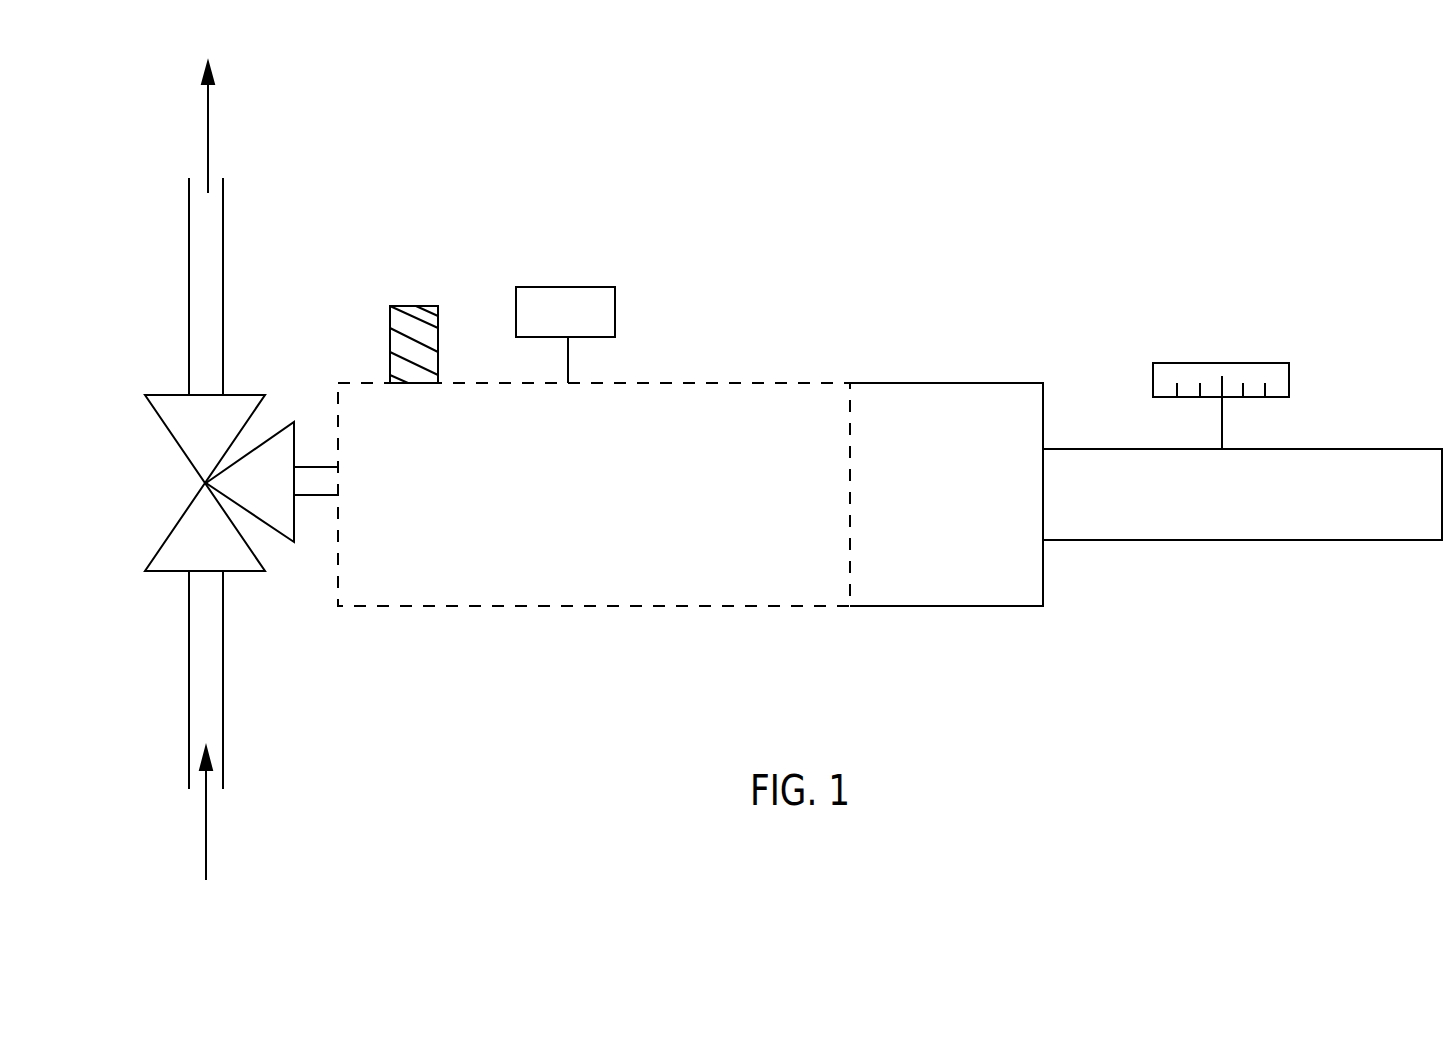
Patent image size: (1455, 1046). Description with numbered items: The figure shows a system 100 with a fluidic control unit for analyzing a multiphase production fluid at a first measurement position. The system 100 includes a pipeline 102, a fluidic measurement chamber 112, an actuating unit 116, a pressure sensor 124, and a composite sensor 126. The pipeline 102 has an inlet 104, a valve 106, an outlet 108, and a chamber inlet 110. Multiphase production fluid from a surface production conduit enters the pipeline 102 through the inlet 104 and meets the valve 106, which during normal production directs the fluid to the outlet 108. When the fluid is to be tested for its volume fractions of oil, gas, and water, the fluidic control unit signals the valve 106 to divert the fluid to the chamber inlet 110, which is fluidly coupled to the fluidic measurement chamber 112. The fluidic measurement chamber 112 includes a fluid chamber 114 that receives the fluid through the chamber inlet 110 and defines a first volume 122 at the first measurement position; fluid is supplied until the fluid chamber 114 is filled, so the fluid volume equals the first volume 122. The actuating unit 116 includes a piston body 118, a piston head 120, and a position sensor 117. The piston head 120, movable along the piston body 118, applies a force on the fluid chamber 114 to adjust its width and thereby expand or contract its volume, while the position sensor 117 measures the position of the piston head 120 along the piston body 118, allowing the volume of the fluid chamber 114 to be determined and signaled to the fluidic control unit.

The system 100 is at (654, 132).
The pipeline 102 is at (148, 125).
The inlet 104 is at (189, 657).
The valve 106 is at (165, 393).
The outlet 108 is at (189, 272).
The chamber inlet 110 is at (327, 466).
The fluidic measurement chamber 112 is at (743, 273).
The fluid chamber 114 is at (755, 380).
The actuating unit 116 is at (1387, 365).
The position sensor 117 is at (1237, 362).
The piston body 118 is at (1075, 448).
The piston head 120 is at (925, 382).
The first volume 122 is at (557, 610).
The pressure sensor 124 is at (568, 286).
The composite sensor 126 is at (413, 305).